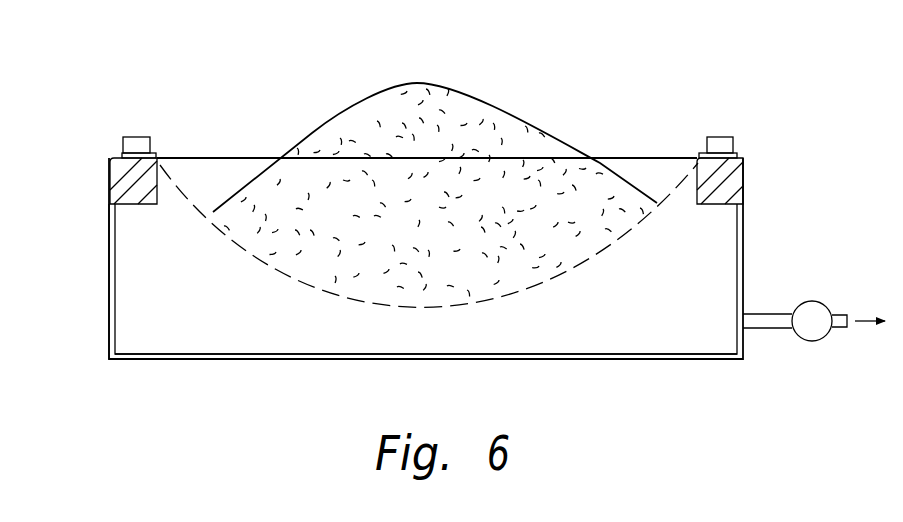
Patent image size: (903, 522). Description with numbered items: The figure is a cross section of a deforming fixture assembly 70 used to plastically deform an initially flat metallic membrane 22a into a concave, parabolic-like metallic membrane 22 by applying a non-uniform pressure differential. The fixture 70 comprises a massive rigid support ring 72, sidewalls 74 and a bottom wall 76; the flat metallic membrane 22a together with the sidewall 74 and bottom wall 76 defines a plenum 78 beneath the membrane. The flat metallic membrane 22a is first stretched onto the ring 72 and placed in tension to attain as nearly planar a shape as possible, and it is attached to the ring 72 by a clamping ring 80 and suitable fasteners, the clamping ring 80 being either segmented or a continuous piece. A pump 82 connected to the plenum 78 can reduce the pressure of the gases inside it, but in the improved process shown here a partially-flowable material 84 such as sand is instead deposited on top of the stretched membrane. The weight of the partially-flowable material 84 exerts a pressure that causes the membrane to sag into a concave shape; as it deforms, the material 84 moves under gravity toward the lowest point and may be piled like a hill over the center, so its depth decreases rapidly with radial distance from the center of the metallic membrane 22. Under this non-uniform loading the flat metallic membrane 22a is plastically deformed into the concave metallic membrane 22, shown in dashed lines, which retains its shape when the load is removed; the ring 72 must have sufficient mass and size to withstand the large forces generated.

The deforming fixture assembly 70 is at (102, 265).
The rigid support ring 72 is at (115, 175).
The sidewalls 74 is at (110, 230).
The bottom wall 76 is at (188, 362).
The plenum 78 is at (273, 320).
The clamping ring 80 is at (131, 137).
The pump 82 is at (808, 301).
The partially-flowable material 84 is at (496, 136).
The metallic membrane 22 is at (563, 273).
The flat metallic membrane 22a is at (207, 155).